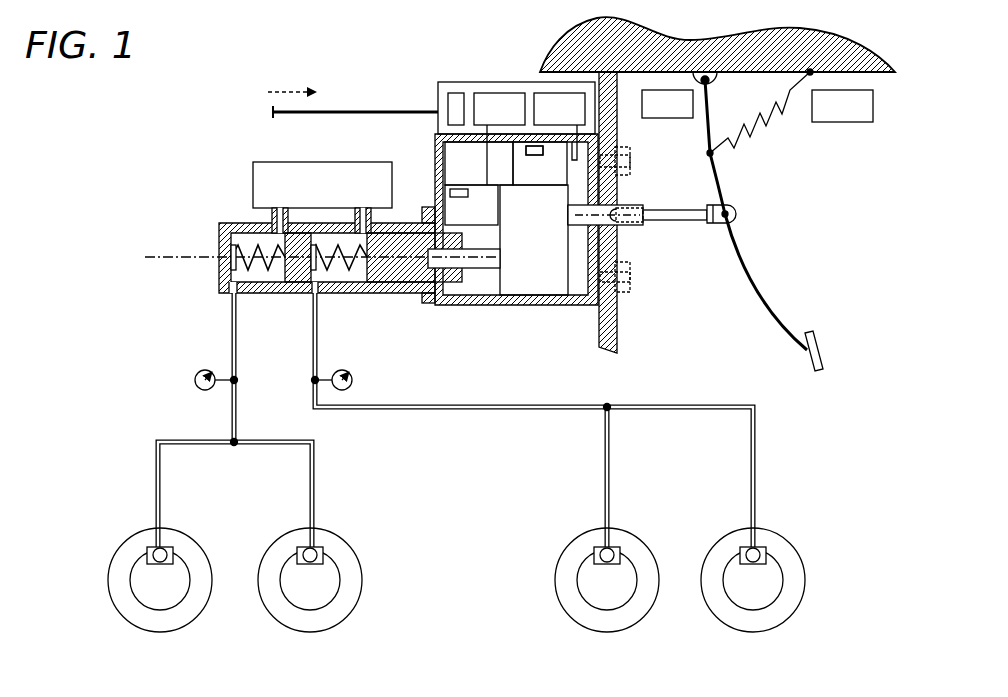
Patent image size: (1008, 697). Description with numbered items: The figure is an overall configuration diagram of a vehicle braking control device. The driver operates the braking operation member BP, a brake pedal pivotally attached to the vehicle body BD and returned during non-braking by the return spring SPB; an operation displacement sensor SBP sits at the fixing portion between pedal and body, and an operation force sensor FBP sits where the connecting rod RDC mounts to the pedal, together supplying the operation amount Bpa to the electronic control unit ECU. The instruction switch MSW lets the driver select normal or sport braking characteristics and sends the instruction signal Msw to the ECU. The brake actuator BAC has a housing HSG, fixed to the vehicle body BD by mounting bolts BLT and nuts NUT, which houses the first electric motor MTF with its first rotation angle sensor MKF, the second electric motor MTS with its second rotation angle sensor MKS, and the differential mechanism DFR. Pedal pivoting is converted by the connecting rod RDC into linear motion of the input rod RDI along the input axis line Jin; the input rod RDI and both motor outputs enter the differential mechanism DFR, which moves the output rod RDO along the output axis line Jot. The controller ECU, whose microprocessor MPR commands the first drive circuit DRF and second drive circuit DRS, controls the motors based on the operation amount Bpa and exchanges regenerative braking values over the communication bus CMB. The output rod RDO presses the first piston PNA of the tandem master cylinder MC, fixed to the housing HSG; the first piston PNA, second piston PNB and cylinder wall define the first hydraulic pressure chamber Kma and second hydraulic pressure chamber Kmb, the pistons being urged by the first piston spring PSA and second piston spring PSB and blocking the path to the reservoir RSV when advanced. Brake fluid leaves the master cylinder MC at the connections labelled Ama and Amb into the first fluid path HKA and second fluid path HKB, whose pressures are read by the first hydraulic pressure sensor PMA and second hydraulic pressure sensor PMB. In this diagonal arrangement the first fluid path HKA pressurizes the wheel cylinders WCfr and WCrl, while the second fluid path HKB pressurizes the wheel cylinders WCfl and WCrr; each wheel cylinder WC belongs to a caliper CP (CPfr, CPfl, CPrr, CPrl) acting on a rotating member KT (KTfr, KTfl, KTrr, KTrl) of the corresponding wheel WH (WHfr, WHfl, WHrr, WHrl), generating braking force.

The vehicle body BD is at (615, 330).
The housing HSG is at (558, 306).
The brake actuator BAC is at (522, 316).
The electronic control unit ECU is at (470, 82).
The microprocessor MPR is at (452, 102).
The second drive circuit DRS is at (499, 117).
The first drive circuit DRF is at (559, 126).
The communication bus CMB is at (368, 110).
The operation amount Bpa is at (239, 91).
The instruction signal Msw is at (239, 91).
The second rotation angle sensor MKS is at (443, 178).
The first electric motor MTF is at (540, 163).
The first rotation angle sensor MKF is at (532, 146).
The second electric motor MTS is at (471, 205).
The differential mechanism DFR is at (534, 240).
The input axis line Jin is at (566, 212).
The connection rod RDC is at (642, 211).
The input rod RDI is at (634, 226).
The operation force sensor FBP is at (707, 224).
The nut NUT is at (628, 148).
The mounting bolt BLT is at (630, 161).
The operation displacement sensor SBP is at (679, 95).
The instruction switch MSW is at (842, 106).
The braking operation member BP is at (757, 290).
The return spring SPB is at (766, 112).
The tandem master cylinder MC is at (250, 222).
The reservoir RSV is at (322, 197).
The output axis line Jot is at (146, 257).
The second piston PNB is at (297, 276).
The first piston PNA is at (410, 274).
The output rod RDO is at (470, 263).
The second hydraulic pressure chamber Kmb is at (236, 247).
The first hydraulic pressure chamber Kma is at (352, 273).
The second piston spring PSB is at (233, 268).
The first piston spring PSA is at (322, 263).
The secondary port Amb is at (232, 294).
The primary port Ama is at (312, 295).
The second fluid path HKB is at (236, 415).
The first fluid path HKA is at (664, 407).
The second hydraulic pressure sensor PMB is at (210, 369).
The first hydraulic pressure sensor PMA is at (337, 369).
The wheel WH is at (467, 596).
The rear-right wheel WHrr is at (161, 632).
The front-left wheel WHfl is at (311, 632).
The front-right wheel WHfr is at (608, 632).
The rear-left wheel WHrl is at (754, 632).
The rotating member KT is at (490, 589).
The rear-right rotating member KTrr is at (160, 580).
The front-left rotating member KTfl is at (310, 580).
The front-right rotating member KTfr is at (607, 580).
The rear-left rotating member KTrl is at (780, 593).
The wheel cylinder WC is at (515, 543).
The rear-right wheel cylinder WCrr is at (172, 548).
The front-left wheel cylinder WCfl is at (322, 548).
The front-right wheel cylinder WCfr is at (620, 548).
The rear-left wheel cylinder WCrl is at (765, 548).
The brake caliper CP is at (517, 555).
The rear-right brake caliper CPrr is at (168, 556).
The front-left brake caliper CPfl is at (318, 556).
The front-right brake caliper CPfr is at (615, 556).
The rear-left brake caliper CPrl is at (761, 556).